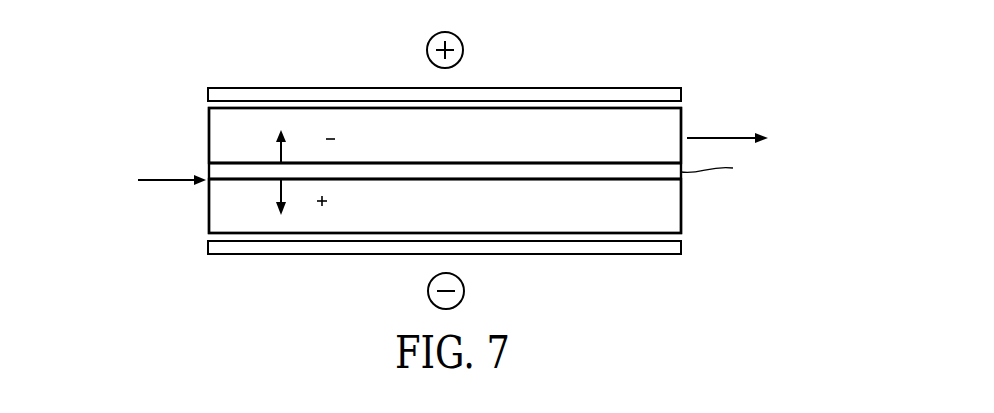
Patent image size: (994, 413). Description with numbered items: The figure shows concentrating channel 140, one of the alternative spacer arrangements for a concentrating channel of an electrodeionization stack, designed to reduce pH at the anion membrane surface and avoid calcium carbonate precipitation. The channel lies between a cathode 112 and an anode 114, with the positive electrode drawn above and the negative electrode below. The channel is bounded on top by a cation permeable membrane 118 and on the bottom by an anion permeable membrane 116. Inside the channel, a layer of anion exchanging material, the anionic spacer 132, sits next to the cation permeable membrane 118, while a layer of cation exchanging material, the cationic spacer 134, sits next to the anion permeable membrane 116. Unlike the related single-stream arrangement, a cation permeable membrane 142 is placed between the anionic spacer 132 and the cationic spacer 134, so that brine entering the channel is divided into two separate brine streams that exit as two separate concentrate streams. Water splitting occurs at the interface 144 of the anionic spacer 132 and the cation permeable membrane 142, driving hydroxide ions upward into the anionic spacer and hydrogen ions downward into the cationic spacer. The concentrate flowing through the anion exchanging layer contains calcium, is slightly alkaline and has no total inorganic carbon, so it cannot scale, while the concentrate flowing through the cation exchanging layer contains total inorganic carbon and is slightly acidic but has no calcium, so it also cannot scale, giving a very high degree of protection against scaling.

The concentrating channel 140 is at (464, 160).
The cathode 112 is at (464, 291).
The anode 114 is at (463, 44).
The anion permeable membrane 116 is at (578, 255).
The cation permeable membrane 118 is at (568, 86).
The anionic spacer 132 is at (668, 125).
The cationic spacer 134 is at (668, 215).
The cation permeable membrane 142 is at (209, 170).
The interface 144 is at (352, 178).